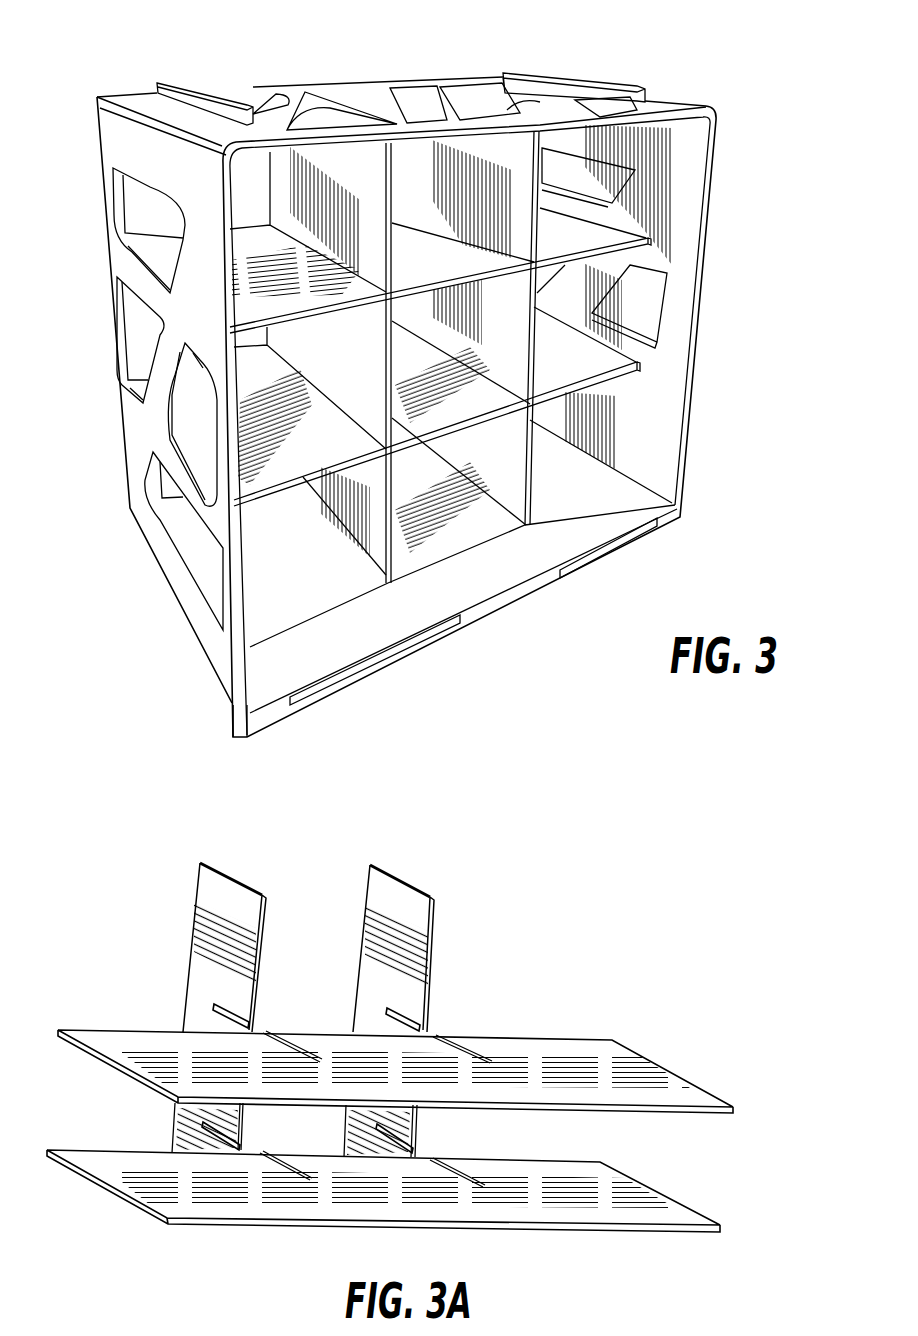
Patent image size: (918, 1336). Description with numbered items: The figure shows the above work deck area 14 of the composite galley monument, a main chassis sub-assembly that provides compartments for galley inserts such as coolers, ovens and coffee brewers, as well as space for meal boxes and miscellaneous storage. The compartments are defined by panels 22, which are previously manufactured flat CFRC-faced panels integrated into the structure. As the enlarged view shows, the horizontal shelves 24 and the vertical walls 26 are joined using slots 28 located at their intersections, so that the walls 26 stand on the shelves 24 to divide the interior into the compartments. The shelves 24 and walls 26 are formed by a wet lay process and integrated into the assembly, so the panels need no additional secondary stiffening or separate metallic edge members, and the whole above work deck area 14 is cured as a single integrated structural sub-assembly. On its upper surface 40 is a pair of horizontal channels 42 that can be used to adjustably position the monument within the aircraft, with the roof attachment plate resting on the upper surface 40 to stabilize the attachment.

In FIG. 3, the above work deck area 14 is at (710, 290).
In FIG. 3, the upper surface 40 is at (670, 108).
In FIG. 3, the horizontal channels 42 is at (183, 80).
In FIG. 3, the panels 22 is at (364, 375).
In FIG. 3A, the horizontal shelves 24 is at (698, 1098).
In FIG. 3A, the vertical walls 26 is at (245, 931).
In FIG. 3A, the slots 28 is at (248, 1021).